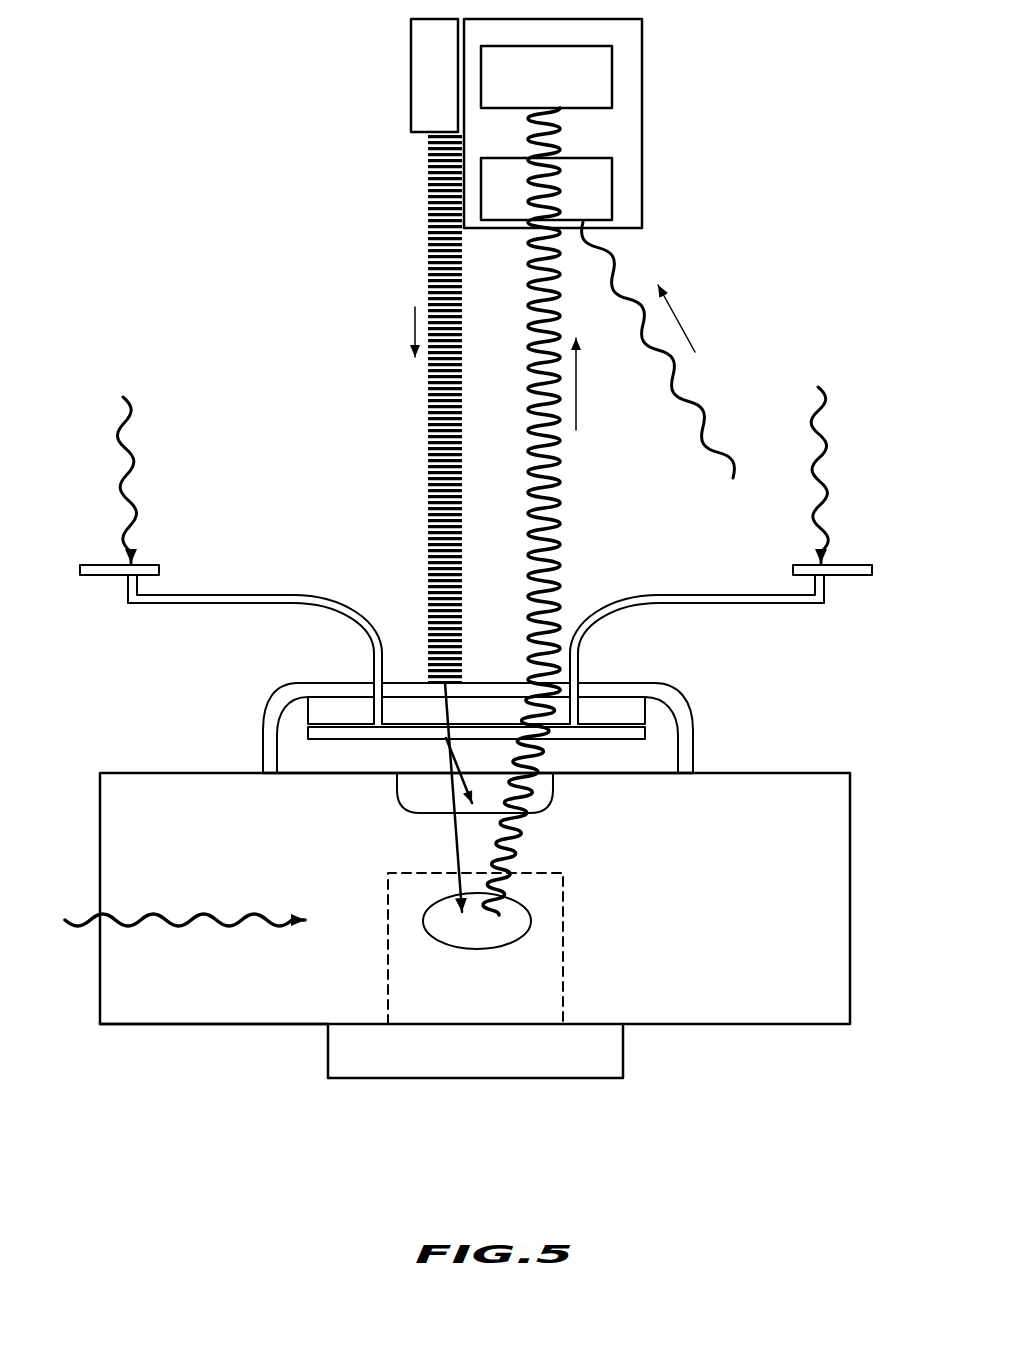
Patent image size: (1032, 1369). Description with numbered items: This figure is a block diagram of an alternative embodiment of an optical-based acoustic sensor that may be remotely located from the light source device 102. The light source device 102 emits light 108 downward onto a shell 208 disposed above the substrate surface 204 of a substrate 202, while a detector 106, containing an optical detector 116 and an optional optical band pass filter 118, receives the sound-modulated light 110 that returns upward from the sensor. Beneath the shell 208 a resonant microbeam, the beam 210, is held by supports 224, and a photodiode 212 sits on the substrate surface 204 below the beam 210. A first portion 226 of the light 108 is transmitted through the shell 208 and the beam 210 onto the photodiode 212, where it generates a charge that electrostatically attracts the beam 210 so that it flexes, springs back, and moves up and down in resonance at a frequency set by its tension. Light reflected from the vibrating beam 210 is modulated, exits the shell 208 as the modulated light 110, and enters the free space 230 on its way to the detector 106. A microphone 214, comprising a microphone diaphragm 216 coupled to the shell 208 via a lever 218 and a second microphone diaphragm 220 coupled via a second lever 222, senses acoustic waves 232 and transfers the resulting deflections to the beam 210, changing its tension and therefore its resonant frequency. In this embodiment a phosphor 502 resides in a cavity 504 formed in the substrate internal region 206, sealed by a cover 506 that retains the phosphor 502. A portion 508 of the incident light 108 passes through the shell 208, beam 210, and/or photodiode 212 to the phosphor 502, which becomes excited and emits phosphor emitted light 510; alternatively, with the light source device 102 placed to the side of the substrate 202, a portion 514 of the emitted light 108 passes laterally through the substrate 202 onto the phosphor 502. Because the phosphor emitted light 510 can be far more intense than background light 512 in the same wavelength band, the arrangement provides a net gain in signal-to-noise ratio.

The light source device 102 is at (411, 52).
The detector 106 is at (643, 41).
The optical detector 116 is at (612, 78).
The optical band pass filter 118 is at (612, 190).
The light 108 is at (428, 233).
The modulated light 110 is at (563, 500).
The background light 512 is at (705, 410).
The free space 230 is at (469, 529).
The microphone 214 is at (201, 624).
The microphone diaphragm 216 is at (83, 565).
The lever 218 is at (207, 603).
The second microphone diaphragm 220 is at (865, 565).
The second lever 222 is at (742, 605).
The acoustic waves 232 is at (143, 478).
The shell 208 is at (273, 728).
The supports 224 is at (372, 712).
The beam 210 is at (347, 740).
The first portion of the light 226 is at (460, 771).
The substrate surface 204 is at (300, 774).
The internal region 206 is at (722, 887).
The photodiode 212 is at (398, 800).
The portion of the light 508 is at (450, 833).
The phosphor emitted light 510 is at (520, 845).
The portion of the emitted light 514 is at (213, 912).
The phosphor 502 is at (477, 950).
The cavity 504 is at (565, 948).
The cover 506 is at (477, 1080).
The substrate 202 is at (168, 1027).